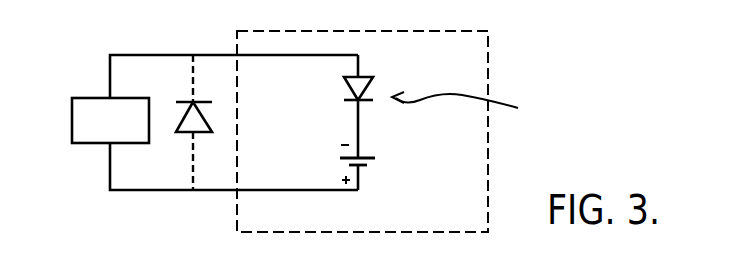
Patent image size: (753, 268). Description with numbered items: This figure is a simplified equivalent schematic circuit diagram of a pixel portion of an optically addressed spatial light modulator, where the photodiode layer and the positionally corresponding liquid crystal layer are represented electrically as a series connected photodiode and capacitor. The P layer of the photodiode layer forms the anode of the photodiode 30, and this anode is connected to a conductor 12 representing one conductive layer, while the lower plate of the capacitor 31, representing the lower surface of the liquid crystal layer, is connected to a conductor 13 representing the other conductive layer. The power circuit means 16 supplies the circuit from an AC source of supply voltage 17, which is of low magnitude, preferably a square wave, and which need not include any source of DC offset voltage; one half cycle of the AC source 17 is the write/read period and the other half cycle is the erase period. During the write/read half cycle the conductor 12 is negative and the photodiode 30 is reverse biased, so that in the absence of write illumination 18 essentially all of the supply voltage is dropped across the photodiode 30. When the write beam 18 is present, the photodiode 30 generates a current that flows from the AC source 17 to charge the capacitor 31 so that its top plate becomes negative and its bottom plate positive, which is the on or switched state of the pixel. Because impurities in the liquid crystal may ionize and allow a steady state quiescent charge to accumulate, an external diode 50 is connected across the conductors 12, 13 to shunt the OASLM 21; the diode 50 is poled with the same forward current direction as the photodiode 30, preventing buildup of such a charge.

The conductor 12 is at (308, 57).
The conductor 13 is at (333, 191).
The power circuit means 16 is at (133, 54).
The AC source of supply voltage 17 is at (88, 144).
The write illumination 18 is at (472, 109).
The OASLM 21 is at (458, 31).
The photodiode 30 is at (376, 82).
The capacitor 31 is at (366, 155).
The external diode 50 is at (182, 133).